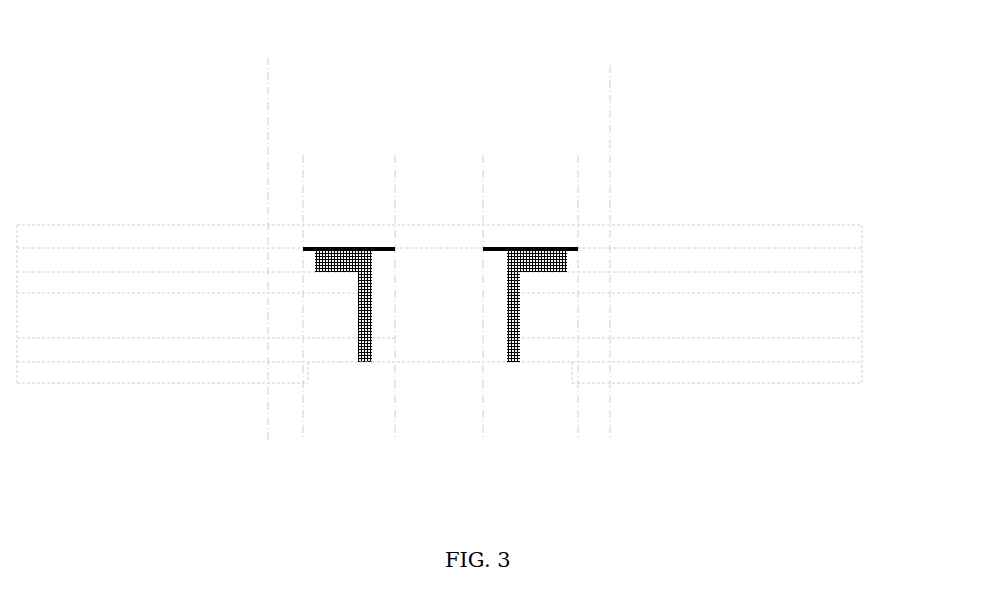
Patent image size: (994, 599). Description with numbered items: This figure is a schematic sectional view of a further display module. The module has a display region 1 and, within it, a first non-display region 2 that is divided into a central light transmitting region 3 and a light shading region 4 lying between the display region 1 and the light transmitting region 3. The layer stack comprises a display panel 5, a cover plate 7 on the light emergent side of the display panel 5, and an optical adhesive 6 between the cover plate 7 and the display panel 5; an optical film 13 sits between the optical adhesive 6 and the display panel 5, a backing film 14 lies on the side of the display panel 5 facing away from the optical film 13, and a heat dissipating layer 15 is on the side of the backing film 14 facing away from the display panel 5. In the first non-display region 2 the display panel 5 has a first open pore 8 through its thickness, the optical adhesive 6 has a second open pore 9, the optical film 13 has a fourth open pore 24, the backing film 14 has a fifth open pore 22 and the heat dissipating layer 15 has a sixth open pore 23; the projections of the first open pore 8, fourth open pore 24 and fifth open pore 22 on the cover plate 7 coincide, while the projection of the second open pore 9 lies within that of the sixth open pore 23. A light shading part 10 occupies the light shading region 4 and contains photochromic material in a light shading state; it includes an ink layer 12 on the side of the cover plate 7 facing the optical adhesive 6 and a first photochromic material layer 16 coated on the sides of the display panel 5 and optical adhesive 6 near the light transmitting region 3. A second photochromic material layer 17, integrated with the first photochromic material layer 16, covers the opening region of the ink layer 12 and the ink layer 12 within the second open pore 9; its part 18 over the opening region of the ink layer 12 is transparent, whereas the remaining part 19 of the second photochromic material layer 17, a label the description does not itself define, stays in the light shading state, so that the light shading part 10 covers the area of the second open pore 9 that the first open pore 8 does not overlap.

The display region 1 is at (190, 125).
The first non-display region 2 is at (573, 87).
The light transmitting region 3 is at (428, 180).
The light shading region 4 is at (353, 180).
The display panel 5 is at (843, 316).
The optical adhesive 6 is at (850, 259).
The cover plate 7 is at (843, 236).
The first open pore 8 is at (462, 318).
The second open pore 9 is at (415, 260).
The light shading part 10 is at (567, 379).
The ink layer 12 is at (307, 247).
The optical film 13 is at (850, 282).
The backing film 14 is at (843, 350).
The heat dissipating layer 15 is at (850, 373).
The first photochromic material layer 16 is at (517, 362).
The second photochromic material layer 17 is at (446, 268).
The part of the second photochromic material layer 18 is at (433, 245).
The second electrode 19 is at (340, 248).
The fifth open pore 22 is at (387, 348).
The sixth open pore 23 is at (347, 375).
The fourth open pore 24 is at (407, 287).